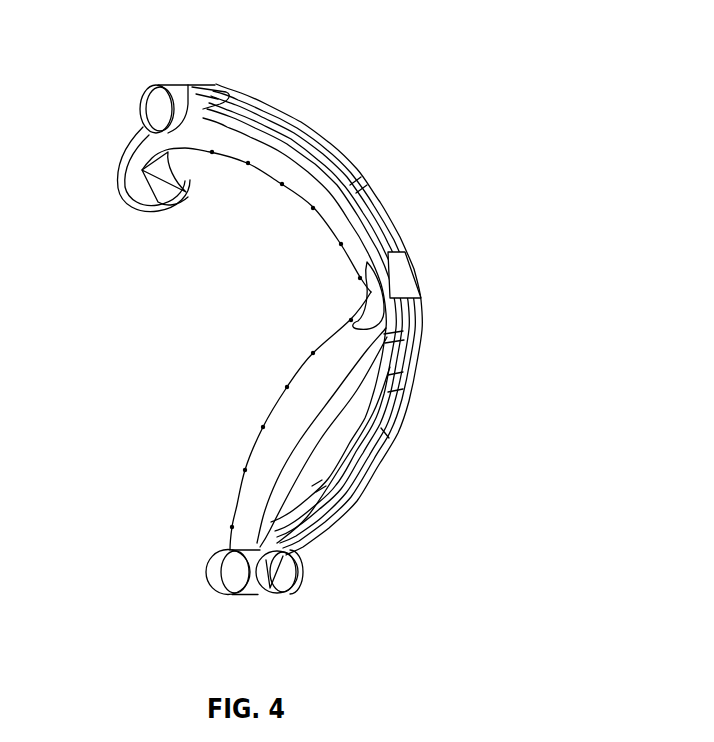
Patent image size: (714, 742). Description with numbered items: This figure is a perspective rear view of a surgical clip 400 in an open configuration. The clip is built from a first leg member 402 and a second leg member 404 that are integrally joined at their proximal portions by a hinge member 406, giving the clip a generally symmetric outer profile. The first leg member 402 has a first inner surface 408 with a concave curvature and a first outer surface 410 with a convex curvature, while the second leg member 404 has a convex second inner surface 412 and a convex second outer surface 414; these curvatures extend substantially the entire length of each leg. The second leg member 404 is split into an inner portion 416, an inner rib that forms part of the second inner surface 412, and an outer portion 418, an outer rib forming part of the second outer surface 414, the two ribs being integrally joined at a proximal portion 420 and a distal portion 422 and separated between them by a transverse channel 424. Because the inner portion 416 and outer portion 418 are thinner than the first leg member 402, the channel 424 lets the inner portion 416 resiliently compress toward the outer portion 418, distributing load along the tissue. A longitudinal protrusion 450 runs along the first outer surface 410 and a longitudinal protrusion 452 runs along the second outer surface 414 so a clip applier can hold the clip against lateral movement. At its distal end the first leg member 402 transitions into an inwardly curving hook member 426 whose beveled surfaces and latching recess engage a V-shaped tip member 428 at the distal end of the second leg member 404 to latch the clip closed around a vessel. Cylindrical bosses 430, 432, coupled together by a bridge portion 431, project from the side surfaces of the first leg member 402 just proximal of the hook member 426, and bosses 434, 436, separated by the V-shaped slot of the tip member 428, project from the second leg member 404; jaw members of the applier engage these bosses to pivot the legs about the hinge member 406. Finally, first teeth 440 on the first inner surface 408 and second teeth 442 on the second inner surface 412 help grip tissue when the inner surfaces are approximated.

The surgical clip 400 is at (512, 108).
The first leg member 402 is at (365, 82).
The second leg member 404 is at (398, 484).
The hinge member 406 is at (412, 282).
The first inner surface 408 is at (262, 180).
The first outer surface 410 is at (398, 238).
The second inner surface 412 is at (277, 413).
The second outer surface 414 is at (414, 345).
The inner portion 416 is at (243, 513).
The outer portion 418 is at (322, 488).
The proximal portion 420 is at (386, 336).
The distal portion 422 is at (297, 566).
The channel 424 is at (343, 412).
The hook member 426 is at (130, 163).
The tip member 428 is at (190, 601).
The boss 430 is at (148, 107).
The bridge portion 431 is at (185, 82).
The boss 432 is at (215, 90).
The boss 434 is at (218, 573).
The boss 436 is at (295, 582).
The first tooth 440 is at (312, 211).
The second tooth 442 is at (243, 473).
The longitudinal protrusion 450 is at (348, 165).
The longitudinal protrusion 452 is at (385, 434).